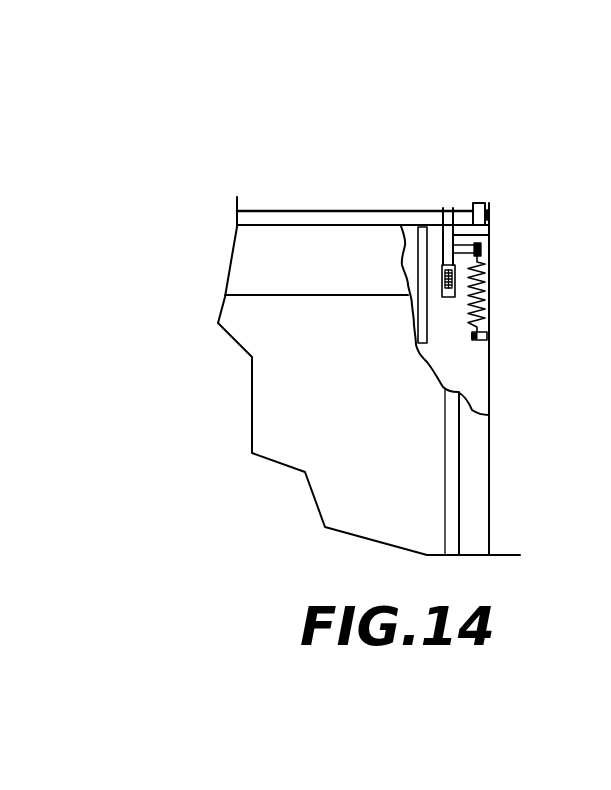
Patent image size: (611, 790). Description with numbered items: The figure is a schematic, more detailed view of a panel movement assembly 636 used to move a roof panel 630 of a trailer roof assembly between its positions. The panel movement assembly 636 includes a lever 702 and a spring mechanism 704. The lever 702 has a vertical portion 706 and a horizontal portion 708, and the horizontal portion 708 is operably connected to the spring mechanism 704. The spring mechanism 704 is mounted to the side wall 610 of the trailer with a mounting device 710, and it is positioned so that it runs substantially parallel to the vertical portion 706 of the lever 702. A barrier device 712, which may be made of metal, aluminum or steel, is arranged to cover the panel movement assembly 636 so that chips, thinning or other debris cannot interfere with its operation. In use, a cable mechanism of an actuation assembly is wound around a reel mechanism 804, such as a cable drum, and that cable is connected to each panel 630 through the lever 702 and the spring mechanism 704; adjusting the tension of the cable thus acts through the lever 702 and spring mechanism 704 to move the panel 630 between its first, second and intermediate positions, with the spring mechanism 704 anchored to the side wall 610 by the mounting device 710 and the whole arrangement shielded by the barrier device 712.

The panel movement assembly 636 is at (278, 122).
The barrier device 712 is at (417, 255).
The vertical portion 706 is at (445, 208).
The panel 630 is at (459, 220).
The lever 702 is at (489, 235).
The horizontal portion 708 is at (482, 250).
The spring mechanism 704 is at (485, 309).
The mounting device 710 is at (485, 338).
The reel mechanism 804 is at (445, 282).
The side wall 610 is at (485, 453).